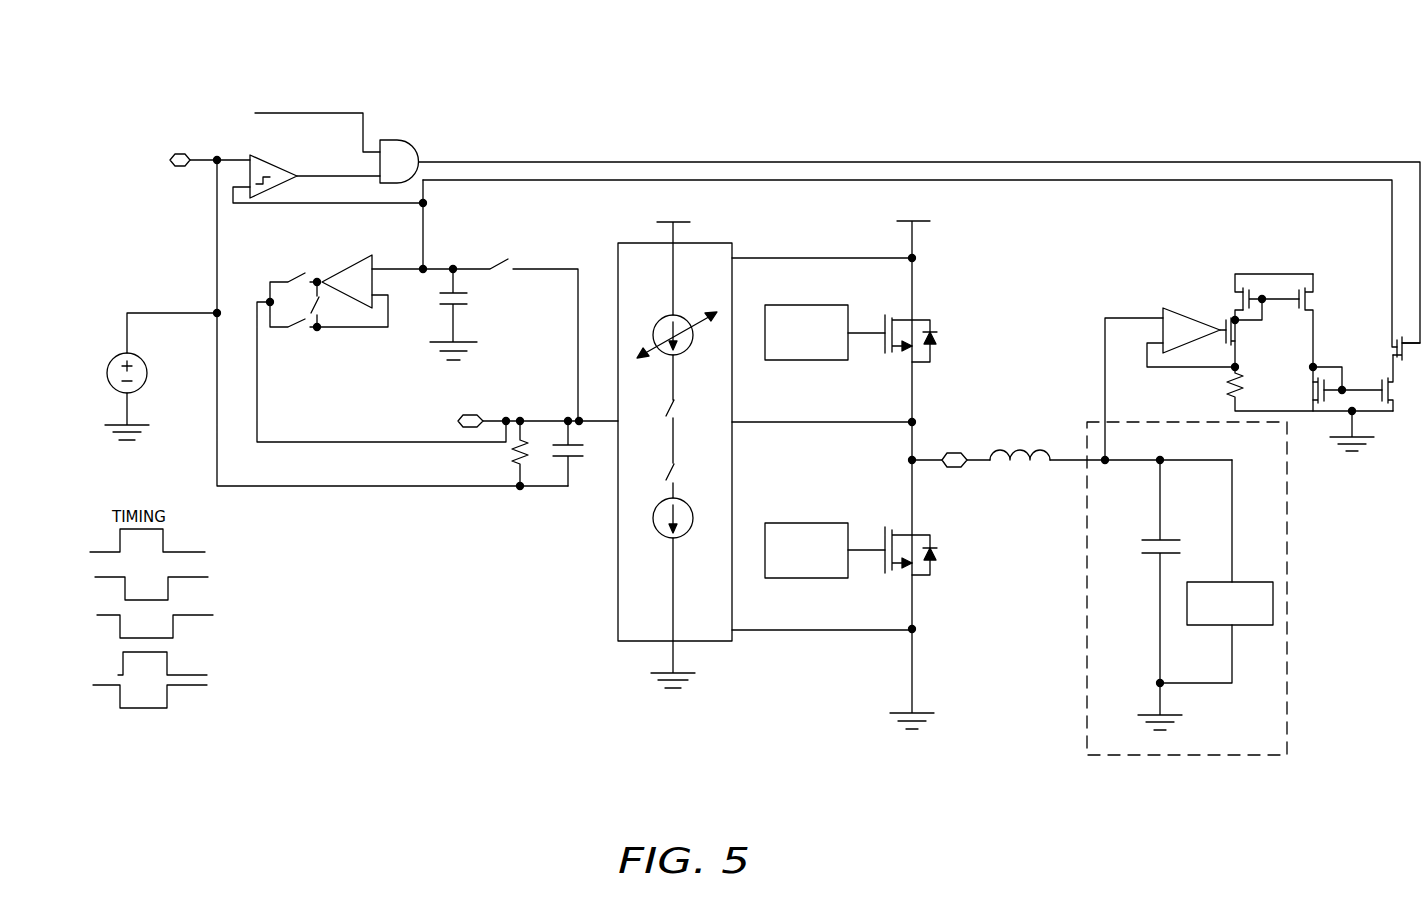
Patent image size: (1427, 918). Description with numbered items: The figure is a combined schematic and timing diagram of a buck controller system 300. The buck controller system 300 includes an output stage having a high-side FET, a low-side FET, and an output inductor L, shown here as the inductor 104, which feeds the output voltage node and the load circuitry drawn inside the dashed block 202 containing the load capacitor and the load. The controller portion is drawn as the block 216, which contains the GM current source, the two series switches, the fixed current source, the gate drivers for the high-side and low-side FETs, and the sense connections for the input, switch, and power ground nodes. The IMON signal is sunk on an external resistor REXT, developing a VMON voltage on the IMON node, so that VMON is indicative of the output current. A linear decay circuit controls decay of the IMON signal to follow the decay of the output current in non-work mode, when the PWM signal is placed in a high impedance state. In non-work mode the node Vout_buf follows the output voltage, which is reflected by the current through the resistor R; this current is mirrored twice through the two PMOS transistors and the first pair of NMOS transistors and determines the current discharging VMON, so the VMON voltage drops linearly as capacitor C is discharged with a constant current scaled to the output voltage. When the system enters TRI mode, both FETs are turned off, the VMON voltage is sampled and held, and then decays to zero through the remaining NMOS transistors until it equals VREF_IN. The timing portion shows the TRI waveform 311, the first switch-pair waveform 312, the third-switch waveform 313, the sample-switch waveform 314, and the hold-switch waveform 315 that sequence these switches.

The buck controller system 300 is at (156, 62).
The controller block 216 is at (722, 243).
The inductor 104 is at (1012, 468).
The load block 202 is at (1178, 757).
The TRI timing waveform 311 is at (205, 552).
The S1/S2 timing waveform 312 is at (208, 577).
The S3 timing waveform 313 is at (221, 604).
The S4/S5/S6 timing waveform 314 is at (207, 675).
The S7 timing waveform 315 is at (207, 685).